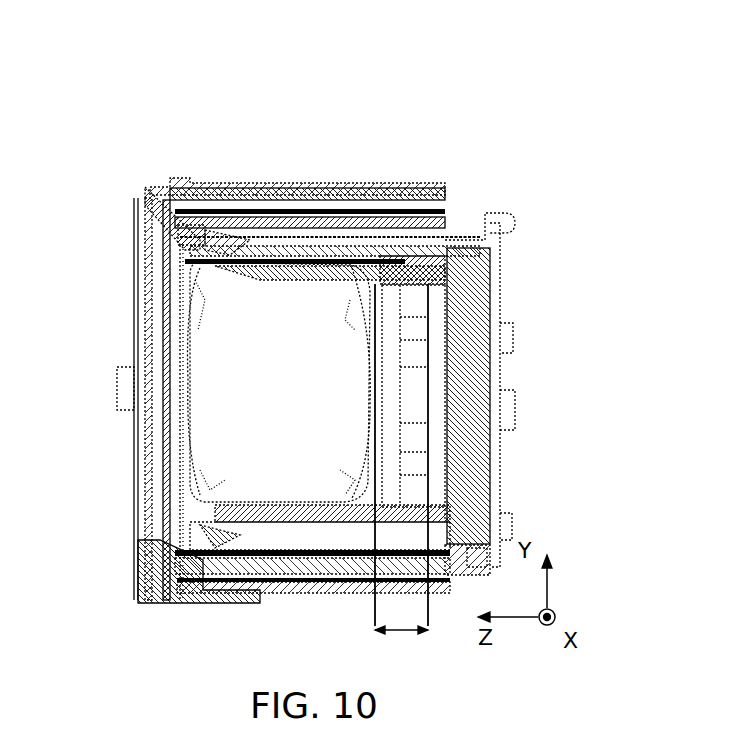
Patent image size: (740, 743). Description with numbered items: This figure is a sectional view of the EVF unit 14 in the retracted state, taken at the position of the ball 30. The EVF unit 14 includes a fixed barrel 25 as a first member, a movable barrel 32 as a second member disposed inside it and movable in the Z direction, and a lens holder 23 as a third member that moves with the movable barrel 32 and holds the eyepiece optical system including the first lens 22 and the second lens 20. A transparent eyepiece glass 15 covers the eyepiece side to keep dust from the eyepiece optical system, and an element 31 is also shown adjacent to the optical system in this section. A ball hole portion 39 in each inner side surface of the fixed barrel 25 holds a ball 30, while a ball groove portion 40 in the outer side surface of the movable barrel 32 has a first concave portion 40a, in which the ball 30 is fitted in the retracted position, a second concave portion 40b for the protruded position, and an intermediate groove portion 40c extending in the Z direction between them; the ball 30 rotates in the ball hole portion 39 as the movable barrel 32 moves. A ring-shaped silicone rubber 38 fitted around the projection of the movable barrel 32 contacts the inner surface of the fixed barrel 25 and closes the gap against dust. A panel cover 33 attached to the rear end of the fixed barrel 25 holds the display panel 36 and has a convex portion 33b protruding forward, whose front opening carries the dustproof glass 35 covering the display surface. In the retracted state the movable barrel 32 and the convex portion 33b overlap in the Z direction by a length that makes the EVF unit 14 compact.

The EVF unit 14 is at (450, 105).
The eyepiece glass 15 is at (157, 513).
The second lens 20 is at (215, 413).
The first lens 22 is at (279, 383).
The lens holder 23 is at (263, 525).
The fixed barrel 25 is at (282, 235).
The ball 30 is at (183, 232).
The member 31 is at (237, 236).
The movable barrel 32 is at (306, 245).
The panel cover 33 is at (450, 553).
The convex portion 33b is at (408, 278).
The dustproof glass 35 is at (388, 473).
The display panel 36 is at (465, 275).
The silicone rubber 38 is at (405, 242).
The ball hole portion 39 is at (206, 232).
The ball groove portion 40 is at (289, 139).
The first concave portion 40a is at (183, 240).
The second concave portion 40b is at (310, 161).
The intermediate groove portion 40c is at (336, 250).